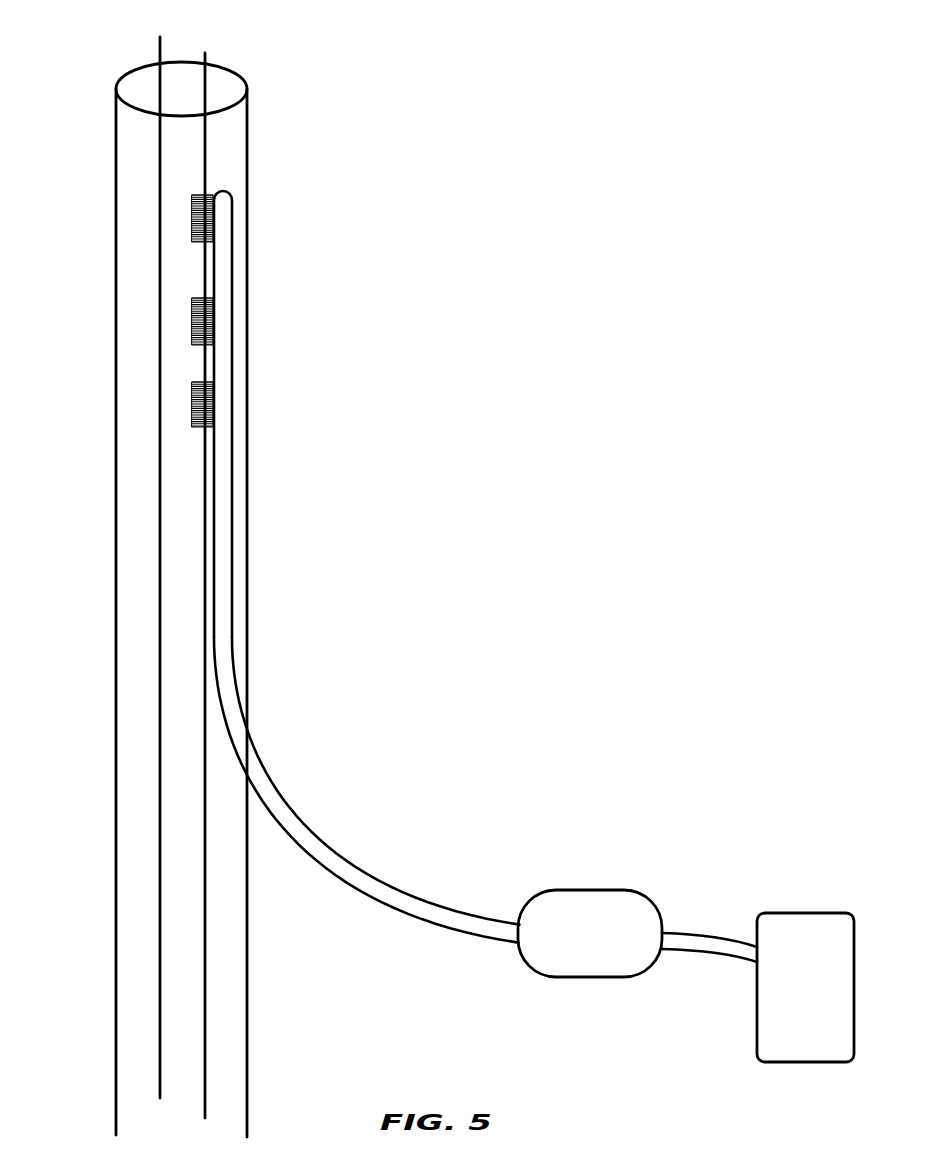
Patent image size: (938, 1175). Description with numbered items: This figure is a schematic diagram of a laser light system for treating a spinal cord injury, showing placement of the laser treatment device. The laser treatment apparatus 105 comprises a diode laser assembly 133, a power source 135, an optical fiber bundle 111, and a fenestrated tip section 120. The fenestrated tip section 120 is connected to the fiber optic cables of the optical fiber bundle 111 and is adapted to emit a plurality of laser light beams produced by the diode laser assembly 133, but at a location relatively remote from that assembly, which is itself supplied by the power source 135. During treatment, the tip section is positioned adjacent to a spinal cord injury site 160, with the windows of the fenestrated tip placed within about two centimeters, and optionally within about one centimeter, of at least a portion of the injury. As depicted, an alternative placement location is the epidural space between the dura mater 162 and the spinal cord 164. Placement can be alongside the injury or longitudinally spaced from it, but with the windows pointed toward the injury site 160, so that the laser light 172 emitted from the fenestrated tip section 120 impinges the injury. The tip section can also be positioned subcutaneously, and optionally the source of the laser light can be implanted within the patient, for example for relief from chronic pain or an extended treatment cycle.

The laser treatment apparatus 105 is at (534, 626).
The optical fiber bundle 111 is at (367, 567).
The fenestrated tip section 120 is at (236, 214).
The diode laser assembly 133 is at (576, 890).
The power source 135 is at (833, 912).
The spinal cord injury site 160 is at (110, 172).
The dura mater 162 is at (143, 62).
The spinal cord 164 is at (207, 63).
The laser light 172 is at (215, 182).